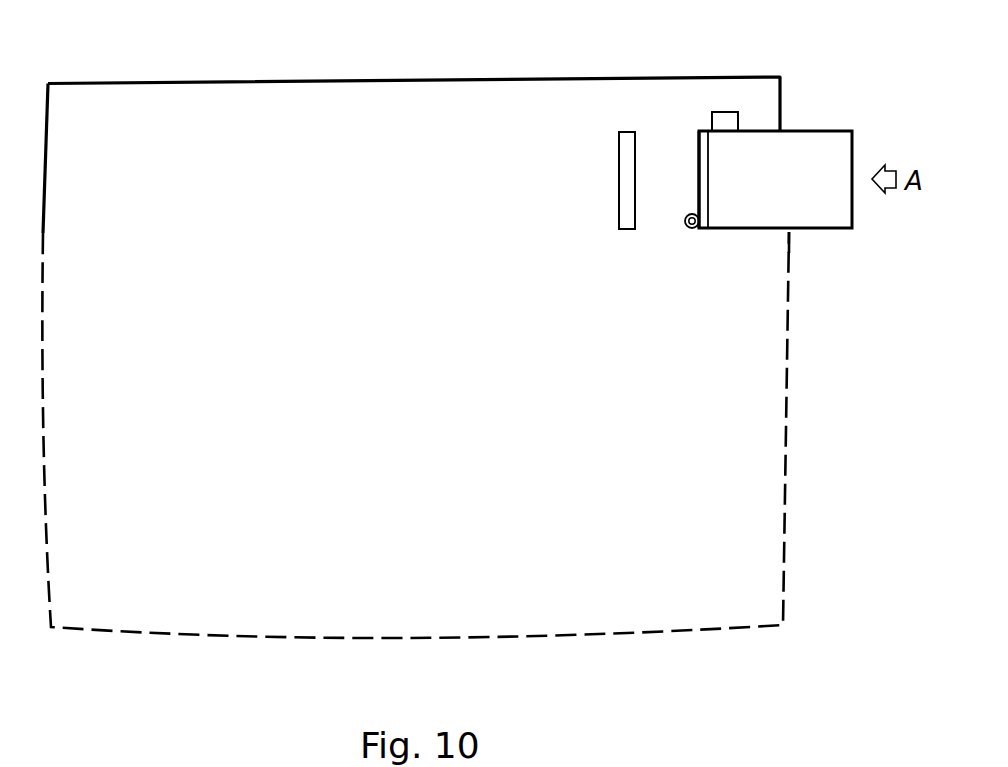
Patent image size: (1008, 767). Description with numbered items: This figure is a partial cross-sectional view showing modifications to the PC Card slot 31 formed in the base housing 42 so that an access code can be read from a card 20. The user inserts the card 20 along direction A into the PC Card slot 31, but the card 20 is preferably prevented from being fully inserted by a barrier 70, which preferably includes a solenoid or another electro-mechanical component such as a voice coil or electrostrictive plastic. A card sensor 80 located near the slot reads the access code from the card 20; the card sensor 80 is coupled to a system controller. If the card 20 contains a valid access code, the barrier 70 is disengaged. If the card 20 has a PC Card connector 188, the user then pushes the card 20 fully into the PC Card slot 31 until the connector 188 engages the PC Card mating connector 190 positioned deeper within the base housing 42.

The base housing 42 is at (756, 95).
The card sensor 80 is at (724, 118).
The PC Card connector 188 is at (705, 137).
The PC Card mating connector 190 is at (619, 150).
The card 20 is at (800, 140).
The barrier 70 is at (693, 230).
The PC Card slot 31 is at (790, 230).